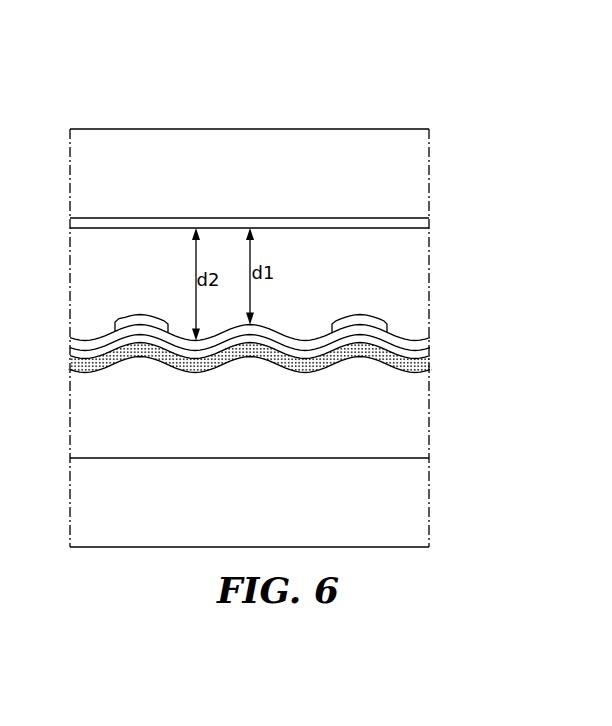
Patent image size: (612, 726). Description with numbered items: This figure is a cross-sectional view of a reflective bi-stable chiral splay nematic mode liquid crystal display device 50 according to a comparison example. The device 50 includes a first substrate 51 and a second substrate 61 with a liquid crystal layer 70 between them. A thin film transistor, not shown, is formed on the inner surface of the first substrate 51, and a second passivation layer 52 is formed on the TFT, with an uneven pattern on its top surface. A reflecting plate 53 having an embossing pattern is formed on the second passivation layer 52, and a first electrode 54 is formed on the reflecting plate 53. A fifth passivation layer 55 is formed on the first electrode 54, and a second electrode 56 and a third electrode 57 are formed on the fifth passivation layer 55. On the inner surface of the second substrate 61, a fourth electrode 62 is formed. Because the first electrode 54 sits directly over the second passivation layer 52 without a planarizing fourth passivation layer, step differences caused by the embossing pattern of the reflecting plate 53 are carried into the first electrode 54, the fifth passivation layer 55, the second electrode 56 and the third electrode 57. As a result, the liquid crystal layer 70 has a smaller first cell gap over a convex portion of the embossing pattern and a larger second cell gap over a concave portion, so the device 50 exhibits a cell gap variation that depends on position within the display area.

The reflective bi-stable chiral splay nematic mode liquid crystal display device 50 is at (399, 95).
The first substrate 51 is at (395, 523).
The second passivation layer 52 is at (193, 443).
The reflecting plate 53 is at (288, 377).
The first electrode 54 is at (323, 373).
The fifth passivation layer 55 is at (302, 346).
The second electrode 56 is at (135, 319).
The third electrode 57 is at (358, 318).
The second substrate 61 is at (417, 173).
The fourth electrode 62 is at (415, 221).
The liquid crystal layer 70 is at (430, 228).